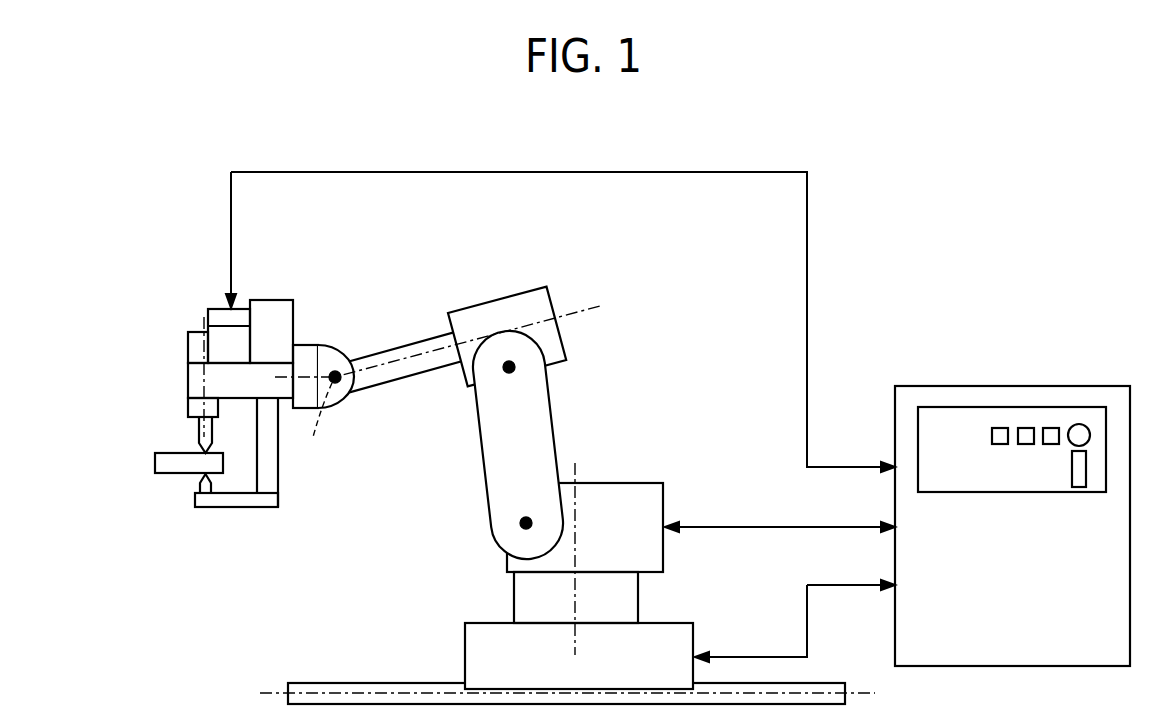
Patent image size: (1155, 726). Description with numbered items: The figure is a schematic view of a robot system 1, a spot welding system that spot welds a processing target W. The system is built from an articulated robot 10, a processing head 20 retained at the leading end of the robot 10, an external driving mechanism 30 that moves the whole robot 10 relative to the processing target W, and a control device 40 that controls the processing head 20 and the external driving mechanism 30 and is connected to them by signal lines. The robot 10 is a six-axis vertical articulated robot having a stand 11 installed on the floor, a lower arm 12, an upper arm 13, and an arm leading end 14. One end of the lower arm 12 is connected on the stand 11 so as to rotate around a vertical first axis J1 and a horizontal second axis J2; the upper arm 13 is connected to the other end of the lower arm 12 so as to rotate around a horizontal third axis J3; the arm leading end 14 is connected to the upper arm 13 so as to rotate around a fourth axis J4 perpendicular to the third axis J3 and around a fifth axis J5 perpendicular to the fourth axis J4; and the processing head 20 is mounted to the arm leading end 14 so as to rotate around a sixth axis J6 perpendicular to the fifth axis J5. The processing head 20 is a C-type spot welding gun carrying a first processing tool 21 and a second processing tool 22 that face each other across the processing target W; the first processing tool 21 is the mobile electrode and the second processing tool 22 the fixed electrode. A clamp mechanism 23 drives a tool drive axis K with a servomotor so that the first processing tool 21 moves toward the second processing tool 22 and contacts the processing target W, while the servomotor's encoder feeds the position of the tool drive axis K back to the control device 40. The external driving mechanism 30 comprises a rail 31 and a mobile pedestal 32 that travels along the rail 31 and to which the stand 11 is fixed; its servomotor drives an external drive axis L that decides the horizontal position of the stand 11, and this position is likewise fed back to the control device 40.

The robot system 1 is at (1017, 218).
The articulated robot 10 is at (508, 426).
The stand 11 is at (640, 597).
The lower arm 12 is at (484, 482).
The upper arm 13 is at (405, 340).
The arm leading end 14 is at (338, 347).
The processing head 20 is at (183, 364).
The first processing tool 21 is at (197, 437).
The second processing tool 22 is at (197, 488).
The clamp mechanism 23 is at (174, 345).
The external driving mechanism 30 is at (567, 634).
The rail 31 is at (357, 682).
The mobile pedestal 32 is at (465, 653).
The control device 40 is at (1010, 386).
The processing target W is at (155, 465).
The tool drive axis K is at (195, 378).
The external drive axis L is at (308, 693).
The first axis J1 is at (578, 510).
The second axis J2 is at (520, 527).
The third axis J3 is at (517, 367).
The fourth axis J4 is at (600, 307).
The fifth axis J5 is at (336, 382).
The sixth axis J6 is at (315, 426).